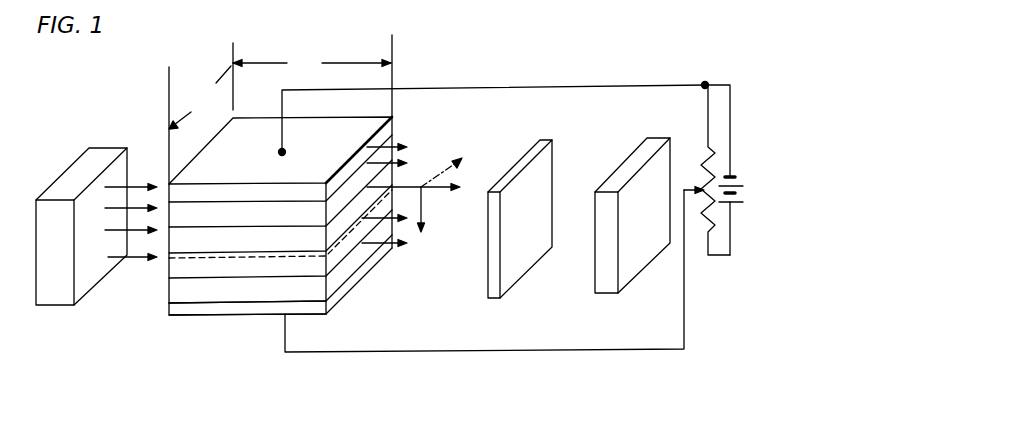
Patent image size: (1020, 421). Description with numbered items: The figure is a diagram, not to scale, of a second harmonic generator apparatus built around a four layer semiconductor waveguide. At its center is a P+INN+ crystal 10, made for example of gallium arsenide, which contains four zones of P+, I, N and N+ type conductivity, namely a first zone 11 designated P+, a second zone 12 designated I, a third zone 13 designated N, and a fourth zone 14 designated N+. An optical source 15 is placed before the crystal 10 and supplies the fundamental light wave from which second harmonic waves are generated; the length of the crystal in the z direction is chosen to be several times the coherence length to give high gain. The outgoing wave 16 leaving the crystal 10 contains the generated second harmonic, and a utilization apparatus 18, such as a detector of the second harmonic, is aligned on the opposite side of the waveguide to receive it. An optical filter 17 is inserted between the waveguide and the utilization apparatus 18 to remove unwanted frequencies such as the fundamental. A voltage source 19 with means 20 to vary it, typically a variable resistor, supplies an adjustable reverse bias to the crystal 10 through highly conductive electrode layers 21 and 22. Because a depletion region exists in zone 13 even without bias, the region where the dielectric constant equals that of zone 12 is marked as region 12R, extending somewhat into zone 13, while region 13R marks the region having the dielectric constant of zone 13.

The P+INN+ crystal 10 is at (309, 30).
The zone of P+ type conductivity 11 is at (280, 193).
The zone of I type conductivity 12 is at (280, 219).
The region 12R is at (166, 228).
The zone of N type conductivity 13 is at (280, 269).
The region 13R is at (166, 259).
The zone of N+ type conductivity 14 is at (247, 293).
The optical source 15 is at (88, 165).
The outgoing wave 16 is at (403, 233).
The optical filter 17 is at (547, 168).
The utilization apparatus 18 is at (602, 268).
The voltage source 19 is at (727, 175).
The means to vary the voltage source 20 is at (700, 170).
The electrode layer 21 is at (387, 131).
The electrode layer 22 is at (202, 312).